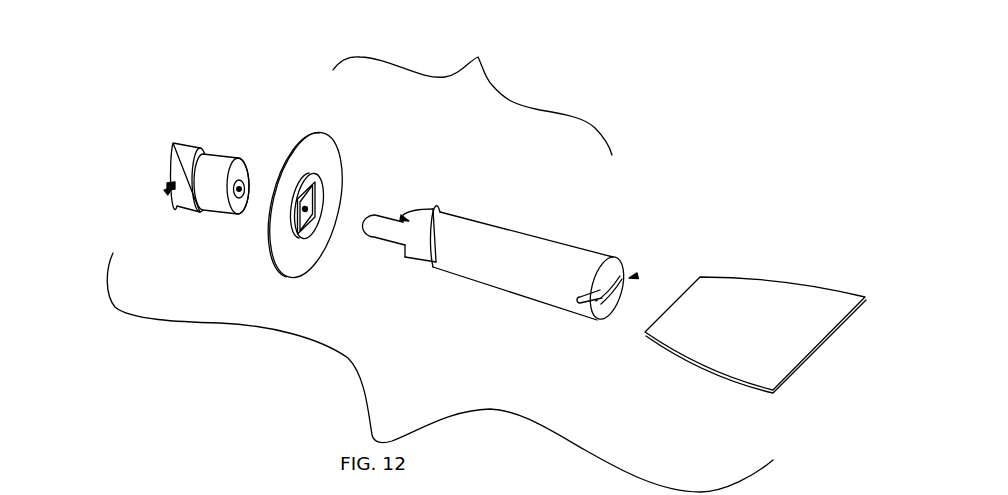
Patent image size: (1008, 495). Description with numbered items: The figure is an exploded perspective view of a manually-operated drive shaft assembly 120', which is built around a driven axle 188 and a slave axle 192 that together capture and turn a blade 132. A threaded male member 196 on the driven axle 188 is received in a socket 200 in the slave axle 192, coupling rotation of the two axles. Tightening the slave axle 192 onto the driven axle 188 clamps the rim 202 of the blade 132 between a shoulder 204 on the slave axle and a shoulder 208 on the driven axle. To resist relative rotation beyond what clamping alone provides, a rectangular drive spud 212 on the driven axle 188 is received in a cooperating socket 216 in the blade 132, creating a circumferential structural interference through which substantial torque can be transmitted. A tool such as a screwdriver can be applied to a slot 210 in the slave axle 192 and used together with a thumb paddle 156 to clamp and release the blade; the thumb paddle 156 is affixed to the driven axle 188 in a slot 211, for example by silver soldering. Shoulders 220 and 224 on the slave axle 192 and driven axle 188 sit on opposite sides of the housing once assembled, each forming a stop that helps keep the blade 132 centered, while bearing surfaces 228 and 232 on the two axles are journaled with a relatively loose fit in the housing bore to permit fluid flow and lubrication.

The drive shaft assembly 120' is at (440, 260).
The slave axle 192 is at (190, 153).
The bearing surface 232 is at (226, 175).
The shoulder 204 is at (235, 203).
The socket 200 is at (241, 192).
The shoulder 220 is at (200, 207).
The slot 210 is at (168, 190).
The blade 132 is at (332, 165).
The rim 202 is at (307, 177).
The socket 216 is at (306, 207).
The threaded male member 196 is at (384, 228).
The drive spud 212 is at (404, 217).
The shoulder 208 is at (404, 256).
The shoulder 224 is at (431, 265).
The bearing surface 228 is at (424, 235).
The driven axle 188 is at (518, 268).
The slot 211 is at (640, 275).
The thumb paddle 156 is at (749, 317).